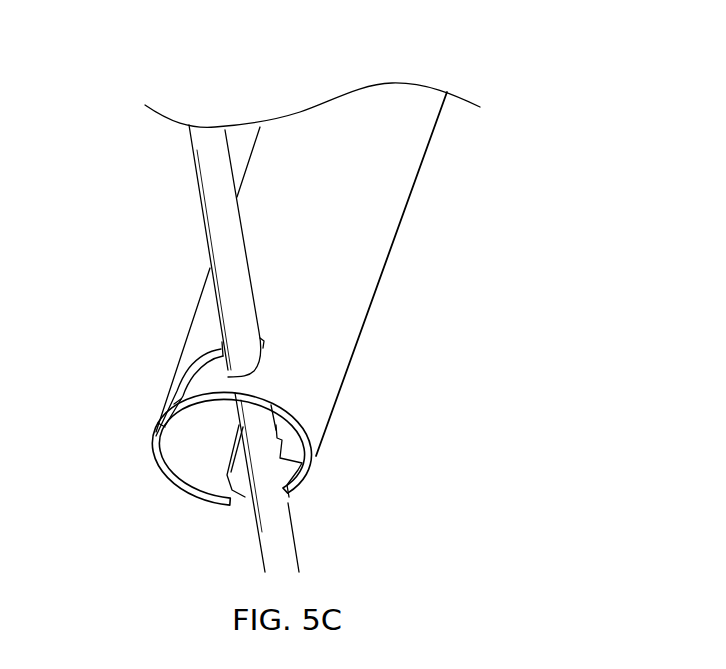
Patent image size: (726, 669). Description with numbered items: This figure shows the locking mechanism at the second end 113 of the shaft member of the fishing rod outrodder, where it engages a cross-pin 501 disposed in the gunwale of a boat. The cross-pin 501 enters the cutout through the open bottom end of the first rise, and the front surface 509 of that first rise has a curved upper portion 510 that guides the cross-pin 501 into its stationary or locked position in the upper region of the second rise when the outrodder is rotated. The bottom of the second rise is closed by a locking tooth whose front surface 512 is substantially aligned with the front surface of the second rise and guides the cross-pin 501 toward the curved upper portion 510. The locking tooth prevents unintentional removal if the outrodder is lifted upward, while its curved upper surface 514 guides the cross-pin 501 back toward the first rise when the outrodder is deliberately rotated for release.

The second end of the shaft member 113 is at (297, 380).
The cross-pin 501 is at (222, 193).
The front surface of the first rise 509 is at (178, 380).
The curved upper portion 510 is at (197, 347).
The front surface of the locking tooth 512 is at (212, 392).
The upper surface of the locking tooth 514 is at (223, 373).